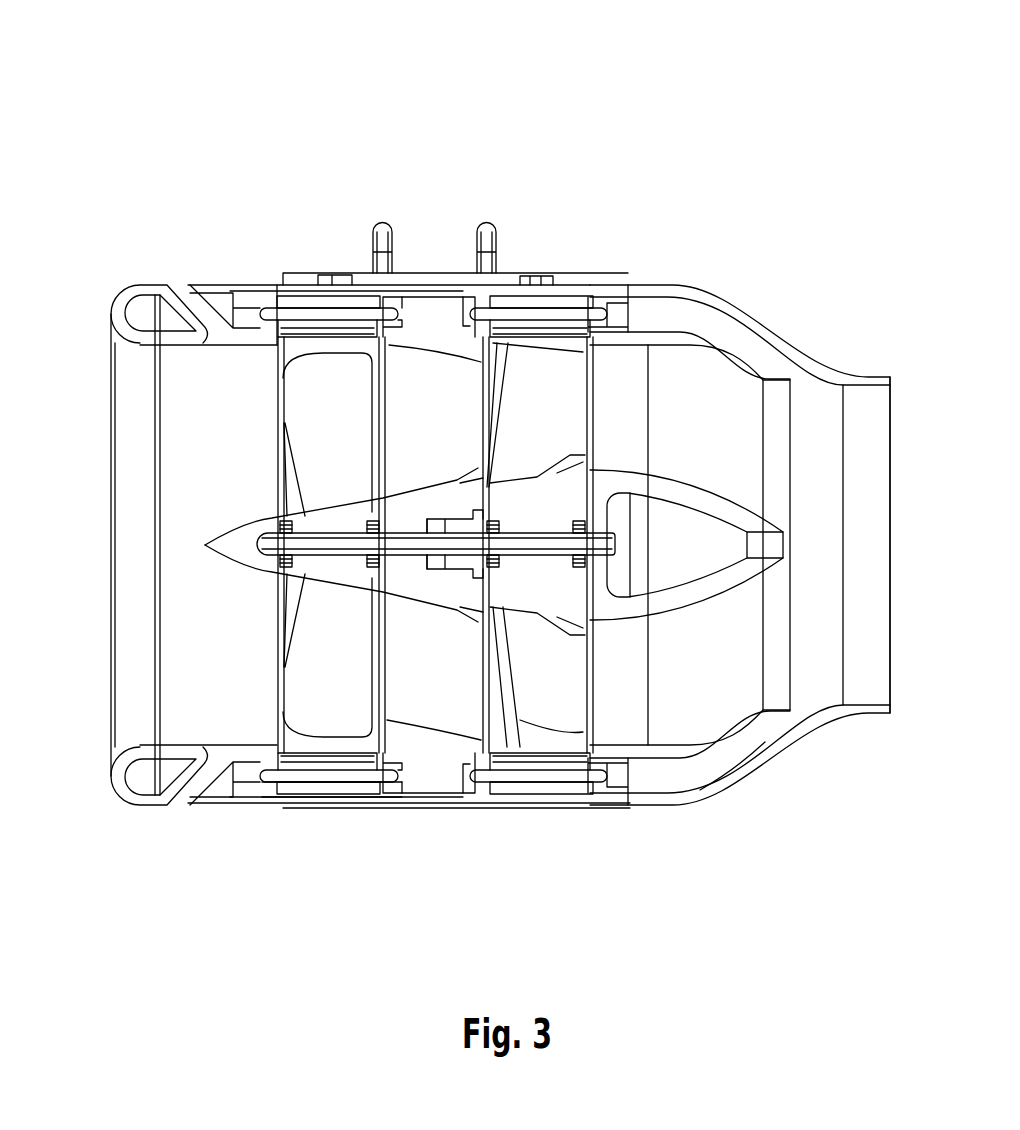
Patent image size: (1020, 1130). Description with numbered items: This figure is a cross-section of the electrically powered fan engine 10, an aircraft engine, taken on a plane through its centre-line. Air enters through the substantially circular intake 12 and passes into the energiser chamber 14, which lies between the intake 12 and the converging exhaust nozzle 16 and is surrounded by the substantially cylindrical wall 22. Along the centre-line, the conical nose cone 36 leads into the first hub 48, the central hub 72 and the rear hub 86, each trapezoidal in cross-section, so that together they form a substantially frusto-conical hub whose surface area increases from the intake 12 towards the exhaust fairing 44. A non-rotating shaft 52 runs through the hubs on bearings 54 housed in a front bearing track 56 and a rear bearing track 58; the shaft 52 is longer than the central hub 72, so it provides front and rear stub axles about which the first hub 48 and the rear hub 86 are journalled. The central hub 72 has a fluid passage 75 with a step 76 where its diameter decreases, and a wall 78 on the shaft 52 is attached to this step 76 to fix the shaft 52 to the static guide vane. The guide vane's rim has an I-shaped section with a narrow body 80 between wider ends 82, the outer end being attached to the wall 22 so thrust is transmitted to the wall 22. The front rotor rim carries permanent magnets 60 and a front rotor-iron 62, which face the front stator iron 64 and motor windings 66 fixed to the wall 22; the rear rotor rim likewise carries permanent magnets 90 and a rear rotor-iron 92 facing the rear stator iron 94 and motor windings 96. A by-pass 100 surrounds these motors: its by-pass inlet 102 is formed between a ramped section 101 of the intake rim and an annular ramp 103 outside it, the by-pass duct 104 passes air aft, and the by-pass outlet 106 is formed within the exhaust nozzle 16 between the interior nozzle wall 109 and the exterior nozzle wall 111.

The electrically powered fan engine 10 is at (300, 108).
The intake 12 is at (152, 852).
The energiser chamber 14 is at (455, 832).
The exhaust nozzle 16 is at (802, 800).
The wall 22 is at (320, 805).
The nose cone 36 is at (275, 533).
The exhaust fairing 44 is at (705, 498).
The first hub 48 is at (345, 572).
The shaft 52 is at (540, 548).
The bearings 54 is at (283, 560).
The front bearing track 56 is at (283, 527).
The rear bearing track 58 is at (362, 522).
The permanent magnets 60 is at (292, 338).
The front rotor-iron 62 is at (352, 330).
The front stator iron 64 is at (282, 320).
The motor windings 66 is at (322, 318).
The central hub 72 is at (397, 495).
The fluid passage 75 is at (437, 520).
The step 76 is at (422, 519).
The wall 78 is at (422, 570).
The body 80 is at (437, 310).
The ends 82 is at (395, 292).
The rear hub 86 is at (563, 605).
The permanent magnets 90 is at (580, 322).
The rear rotor-iron 92 is at (550, 340).
The rear stator iron 94 is at (512, 305).
The motor windings 96 is at (560, 318).
The by-pass 100 is at (660, 786).
The ramped section 101 is at (193, 312).
The by-pass inlet 102 is at (210, 788).
The annular ramp 103 is at (212, 292).
The by-pass duct 104 is at (400, 797).
The by-pass outlet 106 is at (738, 762).
The interior nozzle wall 109 is at (718, 350).
The exterior nozzle wall 111 is at (750, 318).